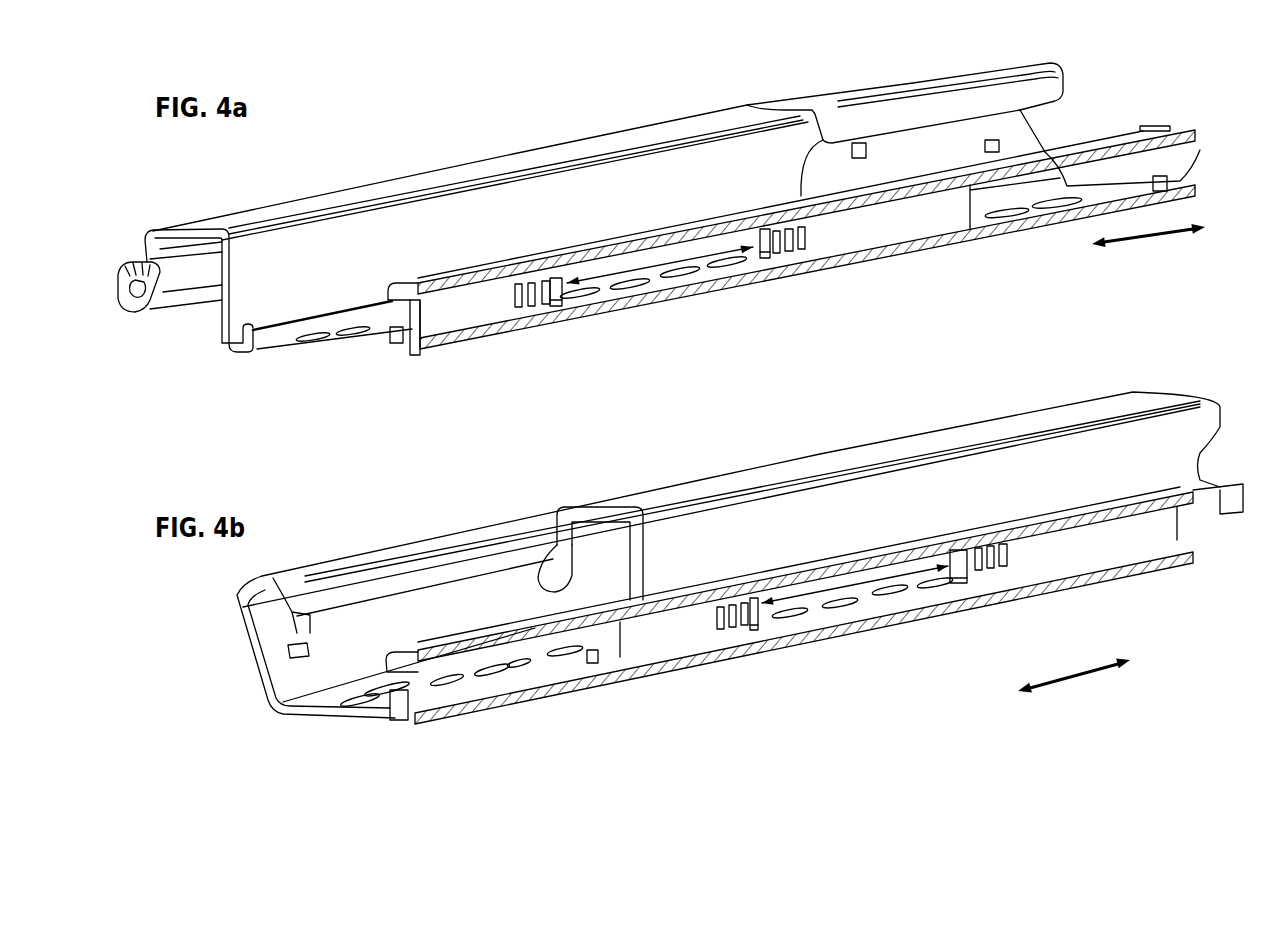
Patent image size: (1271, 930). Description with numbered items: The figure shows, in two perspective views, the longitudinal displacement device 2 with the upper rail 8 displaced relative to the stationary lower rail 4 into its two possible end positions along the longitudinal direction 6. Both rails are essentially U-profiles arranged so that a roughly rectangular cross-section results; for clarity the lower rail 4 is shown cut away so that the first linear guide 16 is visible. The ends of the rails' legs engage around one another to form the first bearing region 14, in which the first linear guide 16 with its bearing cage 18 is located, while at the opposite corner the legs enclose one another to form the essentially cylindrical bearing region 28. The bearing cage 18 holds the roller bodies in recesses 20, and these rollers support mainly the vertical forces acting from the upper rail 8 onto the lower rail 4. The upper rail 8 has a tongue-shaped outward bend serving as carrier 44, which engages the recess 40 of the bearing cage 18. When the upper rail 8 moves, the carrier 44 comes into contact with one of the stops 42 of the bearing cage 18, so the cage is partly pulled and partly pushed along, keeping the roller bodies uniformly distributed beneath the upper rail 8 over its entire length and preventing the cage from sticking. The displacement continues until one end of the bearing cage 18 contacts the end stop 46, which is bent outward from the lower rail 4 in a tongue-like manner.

In FIG. 4A, the longitudinal displacement device 2 is at (791, 62).
In FIG. 4B, the longitudinal displacement device 2 is at (1120, 382).
In FIG. 4A, the lower rail 4 is at (985, 243).
In FIG. 4B, the lower rail 4 is at (1160, 568).
In FIG. 4A, the longitudinal direction 6 is at (1140, 240).
In FIG. 4B, the longitudinal direction 6 is at (1065, 684).
In FIG. 4A, the upper rail 8 is at (497, 168).
In FIG. 4B, the upper rail 8 is at (822, 458).
In FIG. 4A, the first bearing region 14 is at (398, 357).
In FIG. 4B, the first bearing region 14 is at (573, 660).
In FIG. 4A, the first linear guide 16 is at (452, 348).
In FIG. 4B, the first linear guide 16 is at (665, 642).
In FIG. 4A, the bearing cage 18 is at (905, 232).
In FIG. 4B, the bearing cage 18 is at (1085, 550).
In FIG. 4A, the recesses 20 is at (532, 308).
In FIG. 4B, the recesses 20 is at (733, 630).
In FIG. 4A, the bearing region 28 is at (833, 135).
In FIG. 4B, the bearing region 28 is at (526, 582).
In FIG. 4A, the recess 40 is at (660, 290).
In FIG. 4B, the recess 40 is at (850, 622).
In FIG. 4A, the stops 42 is at (560, 302).
In FIG. 4B, the stops 42 is at (760, 625).
In FIG. 4A, the carrier 44 is at (556, 277).
In FIG. 4B, the carrier 44 is at (957, 548).
In FIG. 4A, the end stop 46 is at (365, 347).
In FIG. 4B, the end stop 46 is at (395, 720).